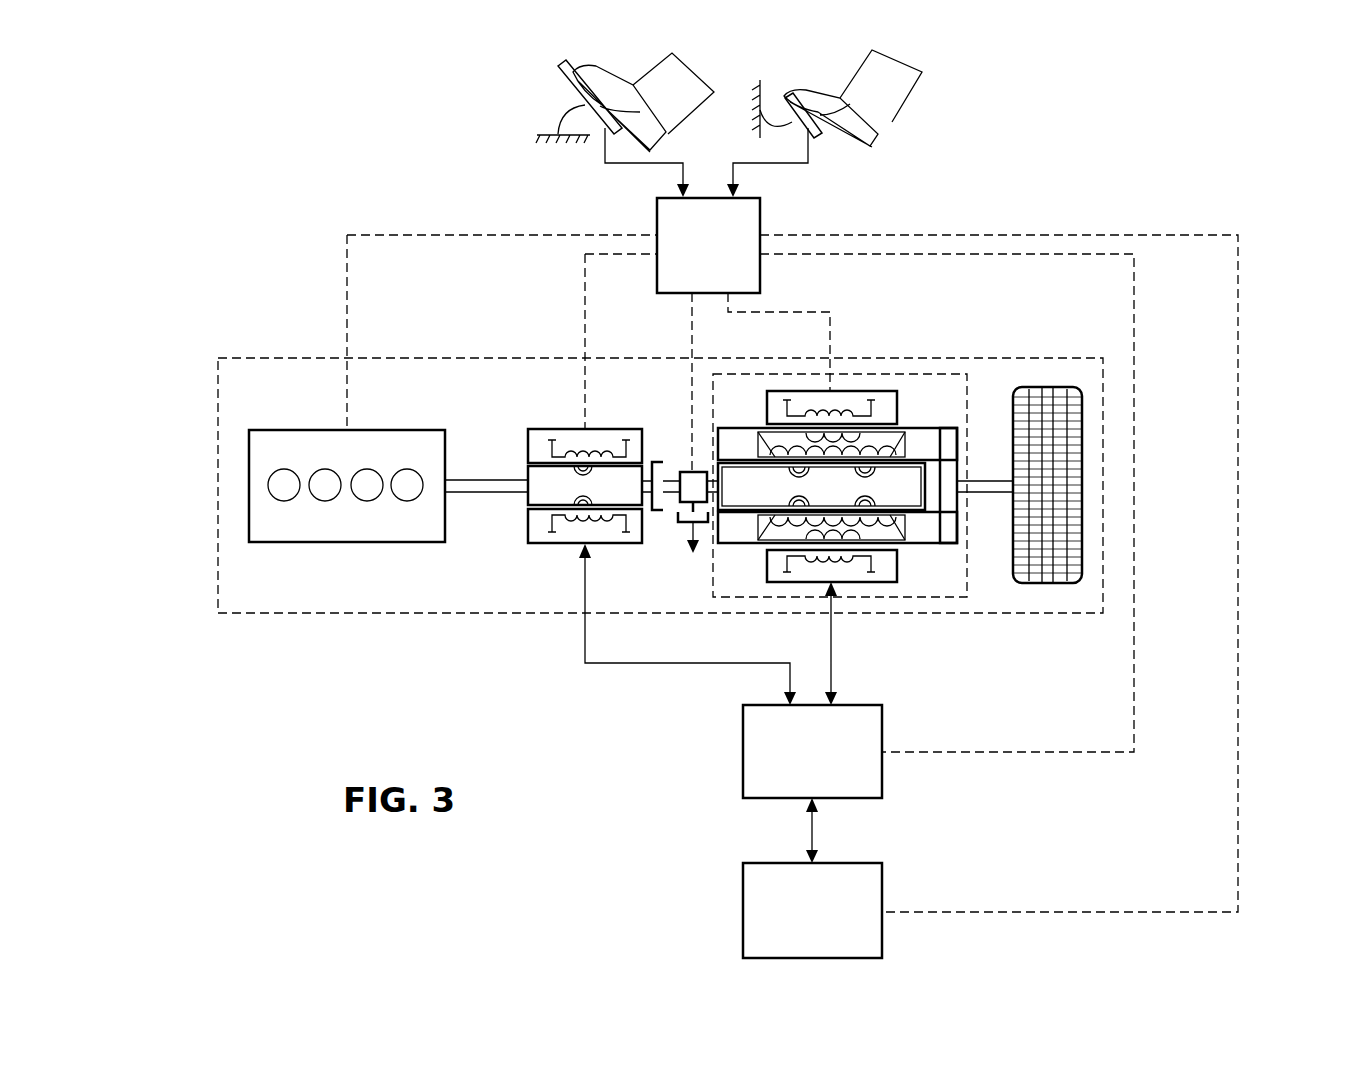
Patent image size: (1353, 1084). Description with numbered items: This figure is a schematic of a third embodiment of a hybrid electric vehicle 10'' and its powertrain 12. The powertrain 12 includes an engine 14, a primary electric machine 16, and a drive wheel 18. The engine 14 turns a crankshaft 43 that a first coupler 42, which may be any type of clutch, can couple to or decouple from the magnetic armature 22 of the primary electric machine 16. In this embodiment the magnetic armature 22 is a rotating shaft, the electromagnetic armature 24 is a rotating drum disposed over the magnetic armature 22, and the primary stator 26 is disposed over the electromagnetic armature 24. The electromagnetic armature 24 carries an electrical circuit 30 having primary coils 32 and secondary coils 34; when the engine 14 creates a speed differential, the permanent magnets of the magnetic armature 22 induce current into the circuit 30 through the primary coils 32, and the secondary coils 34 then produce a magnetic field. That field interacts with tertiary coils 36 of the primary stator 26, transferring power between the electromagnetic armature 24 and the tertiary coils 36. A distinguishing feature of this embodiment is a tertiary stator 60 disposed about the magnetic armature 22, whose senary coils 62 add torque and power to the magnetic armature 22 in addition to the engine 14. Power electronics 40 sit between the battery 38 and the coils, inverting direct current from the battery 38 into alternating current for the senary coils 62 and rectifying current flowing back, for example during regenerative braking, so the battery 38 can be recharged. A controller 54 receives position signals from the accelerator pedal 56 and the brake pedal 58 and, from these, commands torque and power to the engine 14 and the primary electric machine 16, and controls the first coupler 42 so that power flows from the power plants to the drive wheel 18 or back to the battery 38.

The hybrid electric vehicle 10'' is at (215, 68).
The powertrain 12 is at (270, 357).
The engine 14 is at (300, 429).
The primary electric machine 16 is at (967, 373).
The drive wheel 18 is at (1046, 386).
The magnetic armature 22 is at (520, 469).
The electromagnetic armature 24 is at (952, 560).
The primary stator 26 is at (910, 570).
The electrical circuit 30 is at (930, 442).
The primary coils 32 is at (774, 445).
The secondary coils 34 is at (856, 440).
The tertiary coils 36 is at (830, 406).
The battery 38 is at (742, 912).
The power electronics 40 is at (742, 752).
The first coupler 42 is at (675, 446).
The crankshaft 43 is at (470, 493).
The controller 54 is at (656, 230).
The accelerator pedal 56 is at (566, 85).
The brake pedal 58 is at (820, 140).
The tertiary stator 60 is at (575, 501).
The senary coils 62 is at (582, 447).